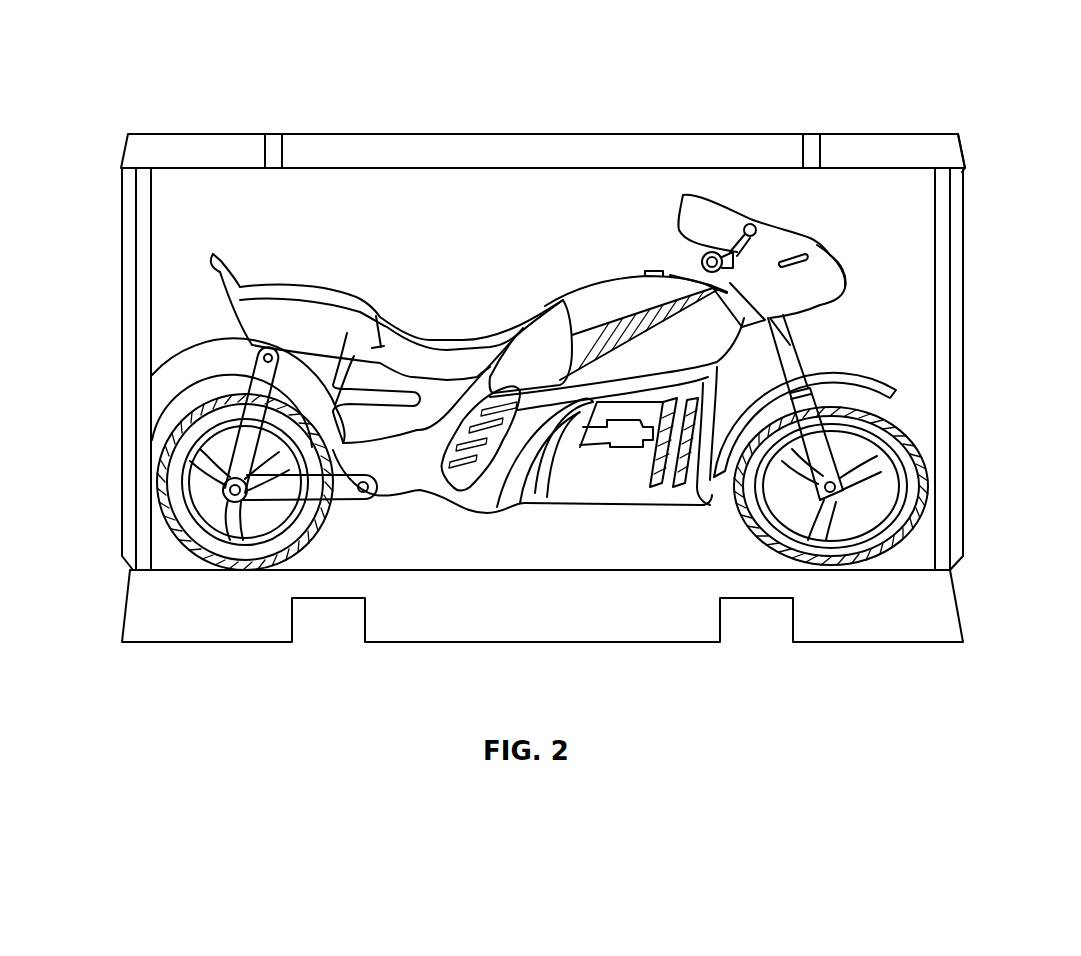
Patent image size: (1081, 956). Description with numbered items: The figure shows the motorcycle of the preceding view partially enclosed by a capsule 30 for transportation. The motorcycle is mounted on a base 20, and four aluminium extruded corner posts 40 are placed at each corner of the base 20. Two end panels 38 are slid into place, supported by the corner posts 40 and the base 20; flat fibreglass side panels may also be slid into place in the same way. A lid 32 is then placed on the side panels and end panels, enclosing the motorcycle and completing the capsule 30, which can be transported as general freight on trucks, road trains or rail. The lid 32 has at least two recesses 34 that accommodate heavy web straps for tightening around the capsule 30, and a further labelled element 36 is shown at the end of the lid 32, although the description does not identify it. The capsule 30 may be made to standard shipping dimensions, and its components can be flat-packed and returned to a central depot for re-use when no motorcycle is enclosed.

The base 20 is at (880, 618).
The capsule 30 is at (556, 340).
The lid 32 is at (455, 134).
The recesses 34 is at (272, 133).
The corner end 36 is at (964, 149).
The end panels 38 is at (125, 223).
The corner posts 40 is at (145, 268).